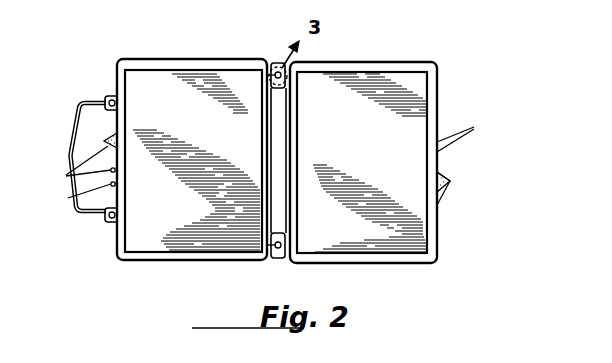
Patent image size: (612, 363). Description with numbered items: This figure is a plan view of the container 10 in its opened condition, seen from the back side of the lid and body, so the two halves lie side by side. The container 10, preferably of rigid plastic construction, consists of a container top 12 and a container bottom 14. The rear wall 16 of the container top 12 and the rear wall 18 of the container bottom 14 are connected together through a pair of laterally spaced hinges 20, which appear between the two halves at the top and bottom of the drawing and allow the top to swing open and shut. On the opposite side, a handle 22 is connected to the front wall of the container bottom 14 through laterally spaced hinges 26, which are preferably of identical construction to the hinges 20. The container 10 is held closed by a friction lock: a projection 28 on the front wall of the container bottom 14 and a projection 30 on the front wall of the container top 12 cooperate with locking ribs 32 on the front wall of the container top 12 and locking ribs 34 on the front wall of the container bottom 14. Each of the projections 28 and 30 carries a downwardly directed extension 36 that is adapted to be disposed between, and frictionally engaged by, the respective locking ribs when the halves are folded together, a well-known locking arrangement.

The container 10 is at (440, 63).
The container top 12 is at (365, 62).
The container bottom 14 is at (172, 59).
The rear wall 16 is at (291, 154).
The rear wall 18 is at (271, 126).
The hinges 20 is at (273, 62).
The handle 22 is at (79, 213).
The hinges 26 is at (105, 110).
The projection 28 is at (79, 167).
The projection 30 is at (450, 181).
The locking ribs 32 is at (466, 136).
The locking ribs 34 is at (81, 196).
The downwardly directed extension 36 is at (104, 140).